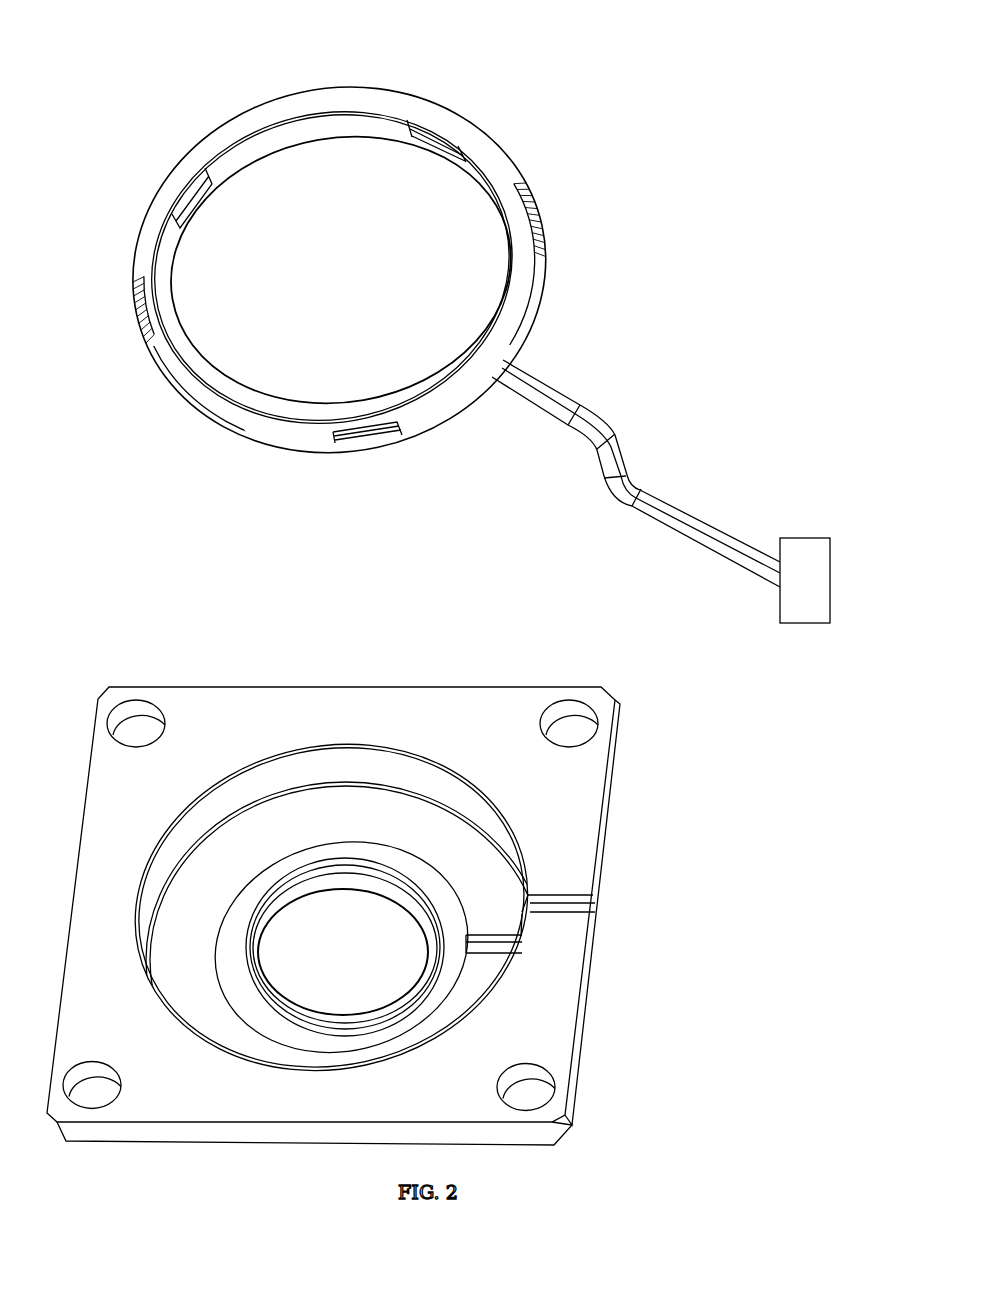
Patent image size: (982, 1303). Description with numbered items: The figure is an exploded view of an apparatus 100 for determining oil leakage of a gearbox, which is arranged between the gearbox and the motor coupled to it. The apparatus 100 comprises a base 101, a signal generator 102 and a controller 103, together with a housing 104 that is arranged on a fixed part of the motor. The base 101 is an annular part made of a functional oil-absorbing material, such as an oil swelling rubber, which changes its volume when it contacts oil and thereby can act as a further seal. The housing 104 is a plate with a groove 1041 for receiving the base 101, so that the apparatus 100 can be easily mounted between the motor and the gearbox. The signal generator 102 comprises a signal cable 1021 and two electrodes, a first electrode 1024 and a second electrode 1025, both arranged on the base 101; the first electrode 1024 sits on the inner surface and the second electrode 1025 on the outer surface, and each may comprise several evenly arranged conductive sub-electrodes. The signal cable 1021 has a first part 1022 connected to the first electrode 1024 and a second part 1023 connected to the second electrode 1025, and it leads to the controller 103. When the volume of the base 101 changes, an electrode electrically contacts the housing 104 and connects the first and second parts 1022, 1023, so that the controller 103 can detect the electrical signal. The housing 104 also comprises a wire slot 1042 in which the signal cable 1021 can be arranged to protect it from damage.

The apparatus 100 is at (408, 38).
The base 101 is at (222, 140).
The signal generator 102 is at (548, 237).
The signal cable 1021 is at (550, 372).
The first part 1022 is at (572, 405).
The second part 1023 is at (604, 420).
The first electrode 1024 is at (203, 204).
The second electrode 1025 is at (537, 210).
The controller 103 is at (798, 552).
The housing 104 is at (96, 803).
The groove 1041 is at (430, 993).
The wire slot 1042 is at (593, 918).